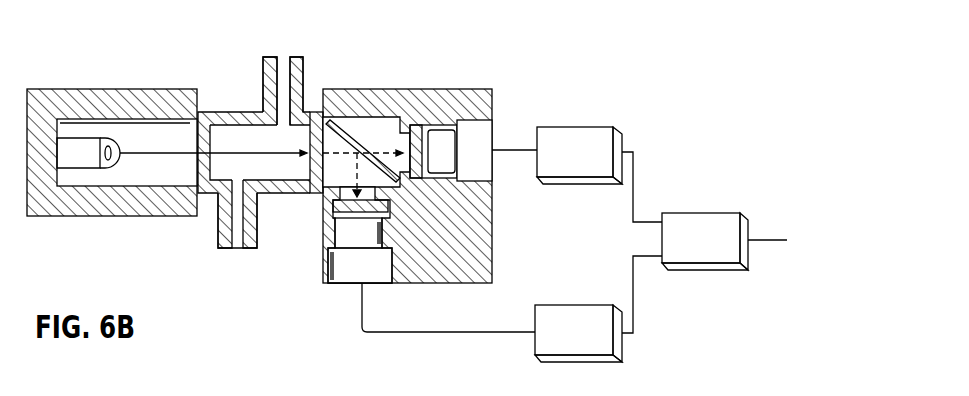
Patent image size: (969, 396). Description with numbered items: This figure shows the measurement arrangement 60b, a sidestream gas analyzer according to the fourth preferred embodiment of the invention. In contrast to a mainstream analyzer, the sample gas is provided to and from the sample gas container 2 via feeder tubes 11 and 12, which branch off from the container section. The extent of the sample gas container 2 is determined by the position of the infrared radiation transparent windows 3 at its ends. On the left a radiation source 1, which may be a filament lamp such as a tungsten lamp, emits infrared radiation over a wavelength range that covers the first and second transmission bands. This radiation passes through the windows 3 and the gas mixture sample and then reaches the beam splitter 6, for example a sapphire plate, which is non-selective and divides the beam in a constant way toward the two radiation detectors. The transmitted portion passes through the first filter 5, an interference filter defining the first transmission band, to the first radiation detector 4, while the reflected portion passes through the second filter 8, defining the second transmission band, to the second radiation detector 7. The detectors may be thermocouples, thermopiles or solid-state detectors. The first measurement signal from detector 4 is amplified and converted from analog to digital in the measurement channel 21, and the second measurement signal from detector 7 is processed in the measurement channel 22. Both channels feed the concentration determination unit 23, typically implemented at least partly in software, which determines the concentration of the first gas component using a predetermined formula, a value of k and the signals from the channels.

The radiation source 1 is at (113, 138).
The sample gas container 2 is at (272, 152).
The infrared radiation transparent windows 3 is at (200, 110).
The first radiation detector 4 is at (490, 102).
The first filter 5 is at (443, 130).
The beam splitter 6 is at (343, 103).
The second radiation detector 7 is at (365, 233).
The second filter 8 is at (322, 218).
The feeder tube 11 is at (230, 250).
The feeder tube 12 is at (283, 62).
The measurement channel 21 is at (577, 127).
The measurement channel 22 is at (573, 305).
The concentration determination unit 23 is at (683, 213).
The measurement arrangement 60b is at (565, 76).